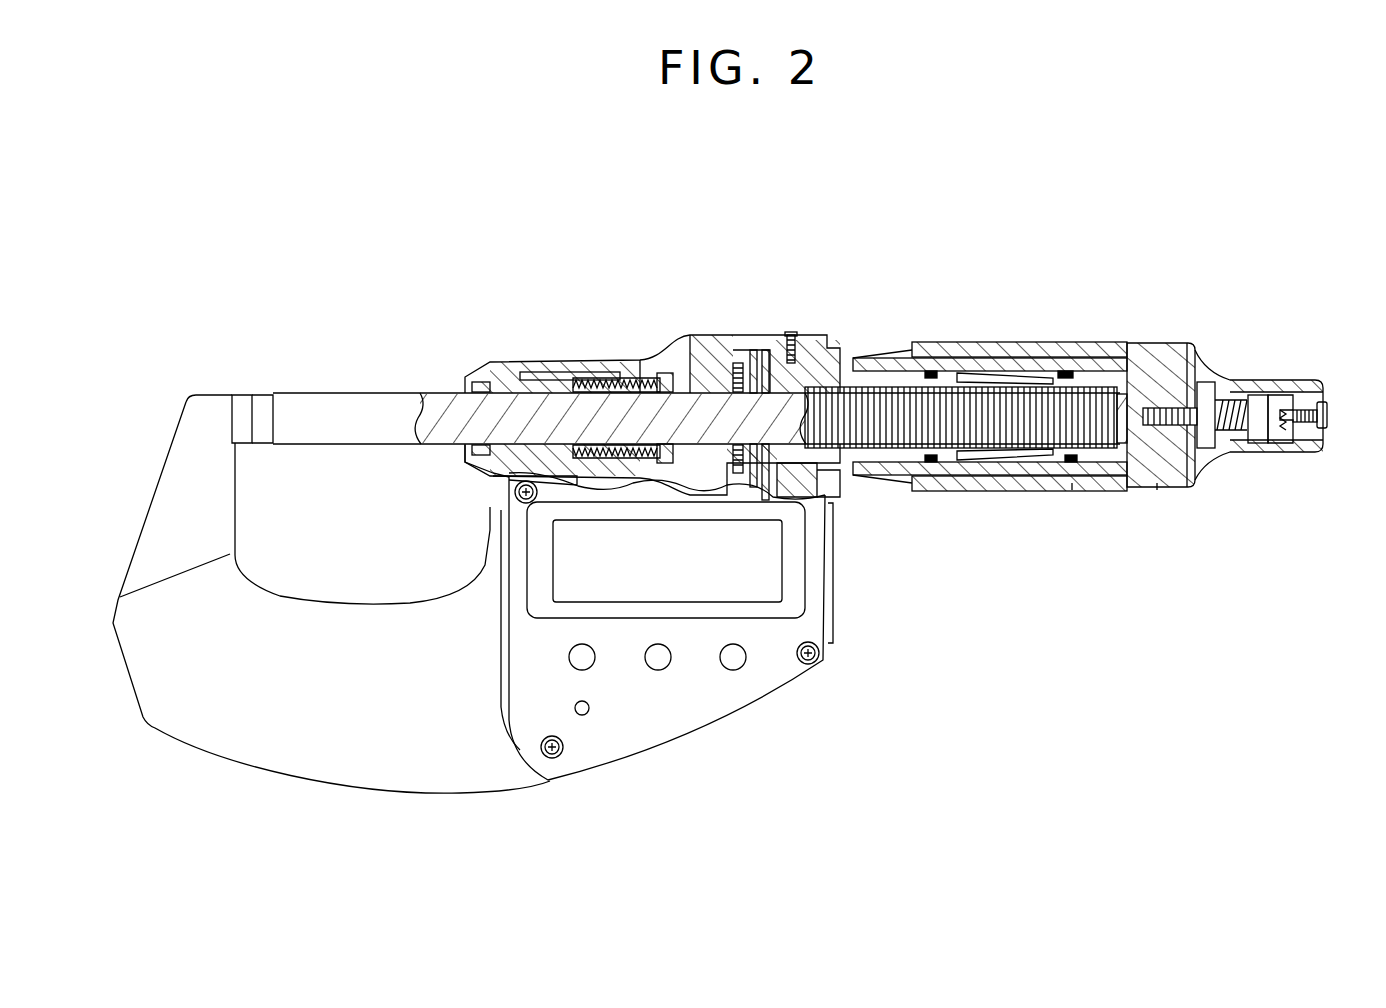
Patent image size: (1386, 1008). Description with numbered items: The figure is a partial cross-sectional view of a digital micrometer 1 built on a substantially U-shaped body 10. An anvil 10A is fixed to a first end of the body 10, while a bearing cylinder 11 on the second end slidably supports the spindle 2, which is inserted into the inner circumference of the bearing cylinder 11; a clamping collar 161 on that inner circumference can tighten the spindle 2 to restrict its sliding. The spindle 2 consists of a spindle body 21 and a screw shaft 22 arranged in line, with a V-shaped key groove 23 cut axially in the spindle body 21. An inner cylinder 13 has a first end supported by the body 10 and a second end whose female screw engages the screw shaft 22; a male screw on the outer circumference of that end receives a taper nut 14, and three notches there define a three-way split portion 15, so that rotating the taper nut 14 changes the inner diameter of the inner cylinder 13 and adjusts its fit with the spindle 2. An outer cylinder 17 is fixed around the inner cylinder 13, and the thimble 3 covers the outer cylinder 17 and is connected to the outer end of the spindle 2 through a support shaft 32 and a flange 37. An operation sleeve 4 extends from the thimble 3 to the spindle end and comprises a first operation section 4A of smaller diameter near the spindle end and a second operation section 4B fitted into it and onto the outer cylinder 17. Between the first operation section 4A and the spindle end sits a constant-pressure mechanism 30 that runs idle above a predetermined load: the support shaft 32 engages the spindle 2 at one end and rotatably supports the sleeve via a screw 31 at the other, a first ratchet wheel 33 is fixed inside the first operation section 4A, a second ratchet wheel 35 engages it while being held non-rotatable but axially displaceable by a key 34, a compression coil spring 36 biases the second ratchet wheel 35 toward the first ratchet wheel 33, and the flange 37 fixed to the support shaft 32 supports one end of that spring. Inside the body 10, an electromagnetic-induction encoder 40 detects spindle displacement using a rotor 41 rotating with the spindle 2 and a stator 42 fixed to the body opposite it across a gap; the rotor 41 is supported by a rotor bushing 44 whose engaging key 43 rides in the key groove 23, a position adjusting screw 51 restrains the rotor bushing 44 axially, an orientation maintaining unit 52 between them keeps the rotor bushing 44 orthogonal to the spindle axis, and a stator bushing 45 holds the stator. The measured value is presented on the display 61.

The digital micrometer 1 is at (354, 186).
The spindle 2 is at (372, 392).
The thimble 3 is at (1030, 474).
The operation sleeve 4 is at (1114, 553).
The first operation section 4A is at (1157, 485).
The second operation section 4B is at (1074, 485).
The body 10 is at (450, 782).
The anvil 10A is at (237, 395).
The bearing cylinder 11 is at (478, 367).
The inner cylinder 13 is at (863, 358).
The taper nut 14 is at (1110, 356).
The three-way split portion 15 is at (1030, 352).
The outer cylinder 17 is at (993, 466).
The spindle body 21 is at (334, 440).
The screw shaft 22 is at (950, 467).
The key groove 23 is at (575, 357).
The constant-pressure mechanism 30 is at (1272, 475).
The screw 31 is at (1346, 481).
The support shaft 32 is at (1227, 432).
The first ratchet wheel 33 is at (1302, 442).
The key 34 is at (1273, 437).
The second ratchet wheel 35 is at (1292, 447).
The compression coil spring 36 is at (1247, 447).
The flange 37 is at (1198, 453).
The encoder 40 is at (807, 344).
The rotor 41 is at (757, 353).
The stator 42 is at (763, 355).
The engaging key 43 is at (737, 358).
The rotor bushing 44 is at (717, 358).
The stator bushing 45 is at (840, 478).
The position adjusting screw 51 is at (628, 357).
The orientation maintaining unit 52 is at (682, 358).
The display 61 is at (755, 572).
The clamping collar 161 is at (555, 358).